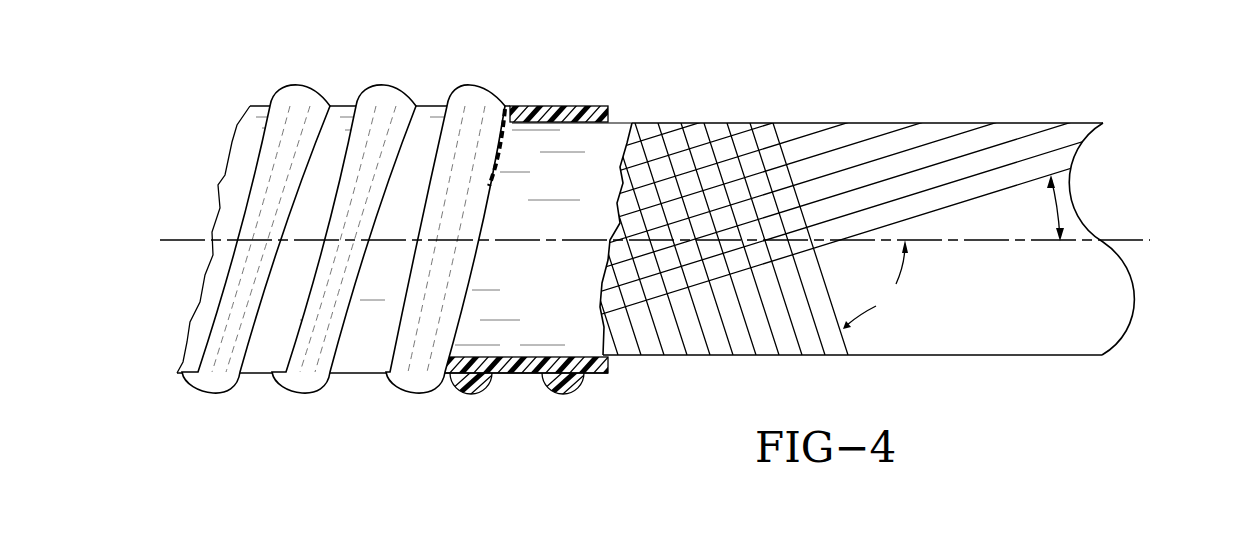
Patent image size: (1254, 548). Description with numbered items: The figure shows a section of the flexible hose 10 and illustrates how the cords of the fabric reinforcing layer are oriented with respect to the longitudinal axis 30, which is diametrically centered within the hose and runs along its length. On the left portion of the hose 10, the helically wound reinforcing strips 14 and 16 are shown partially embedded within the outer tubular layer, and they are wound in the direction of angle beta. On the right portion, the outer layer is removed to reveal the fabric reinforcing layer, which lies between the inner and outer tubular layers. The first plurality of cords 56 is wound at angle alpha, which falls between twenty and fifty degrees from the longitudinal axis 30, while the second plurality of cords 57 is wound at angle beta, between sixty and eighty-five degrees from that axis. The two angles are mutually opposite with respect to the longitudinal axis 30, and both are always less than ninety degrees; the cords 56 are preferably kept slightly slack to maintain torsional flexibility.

The hose 10 is at (238, 57).
The reinforcing strip 14 is at (302, 84).
The reinforcing strip 16 is at (392, 84).
The longitudinal axis 30 is at (1133, 240).
The first plurality of cords 56 is at (912, 150).
The second plurality of cords 57 is at (703, 330).